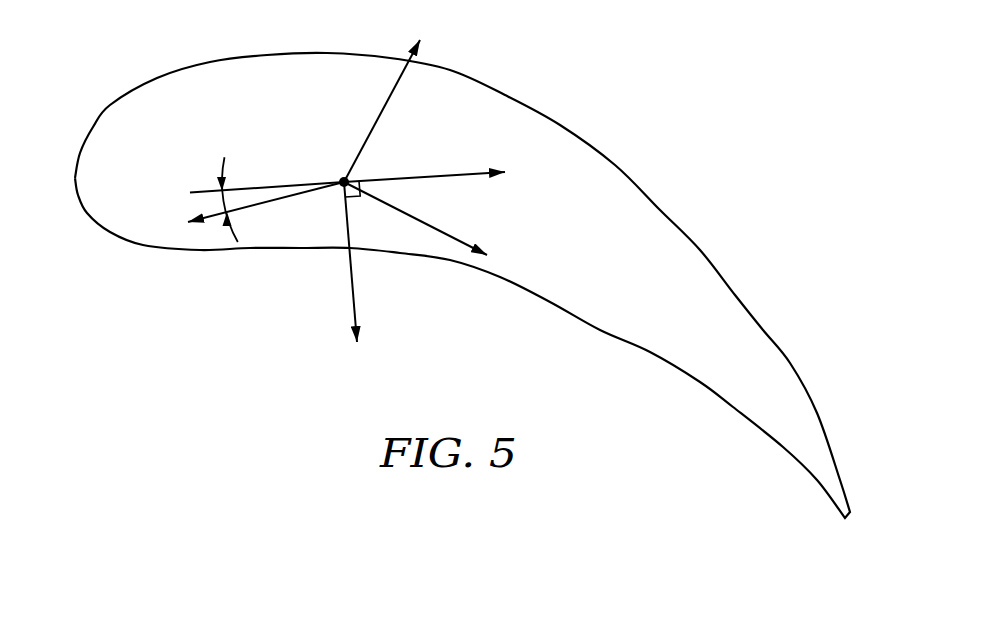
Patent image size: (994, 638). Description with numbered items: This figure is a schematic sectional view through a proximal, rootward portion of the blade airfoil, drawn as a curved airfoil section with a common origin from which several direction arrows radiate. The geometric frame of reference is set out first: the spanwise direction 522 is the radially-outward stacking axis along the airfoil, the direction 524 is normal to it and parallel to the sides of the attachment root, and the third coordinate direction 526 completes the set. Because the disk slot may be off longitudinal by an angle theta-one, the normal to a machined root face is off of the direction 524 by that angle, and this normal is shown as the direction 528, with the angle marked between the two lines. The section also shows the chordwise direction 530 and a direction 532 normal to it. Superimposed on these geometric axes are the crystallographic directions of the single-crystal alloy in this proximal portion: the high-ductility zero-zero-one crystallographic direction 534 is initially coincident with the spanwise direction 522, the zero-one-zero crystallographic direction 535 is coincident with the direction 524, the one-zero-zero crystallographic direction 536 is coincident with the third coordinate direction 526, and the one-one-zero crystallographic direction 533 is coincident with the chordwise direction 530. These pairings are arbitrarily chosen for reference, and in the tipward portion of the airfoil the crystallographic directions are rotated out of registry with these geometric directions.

The spanwise direction 522 is at (237, 150).
The 001 crystallographic direction 534 is at (344, 182).
The direction normal to the spanwise direction 524 is at (552, 133).
The 010 crystallographic direction 535 is at (453, 174).
The third coordinate direction 526 is at (325, 296).
The 100 crystallographic direction 536 is at (355, 320).
The direction normal to machined root face 528 is at (275, 200).
The chordwise direction 530 is at (454, 265).
The 110 crystallographic direction 533 is at (455, 242).
The direction normal to the chordwise direction 532 is at (400, 77).